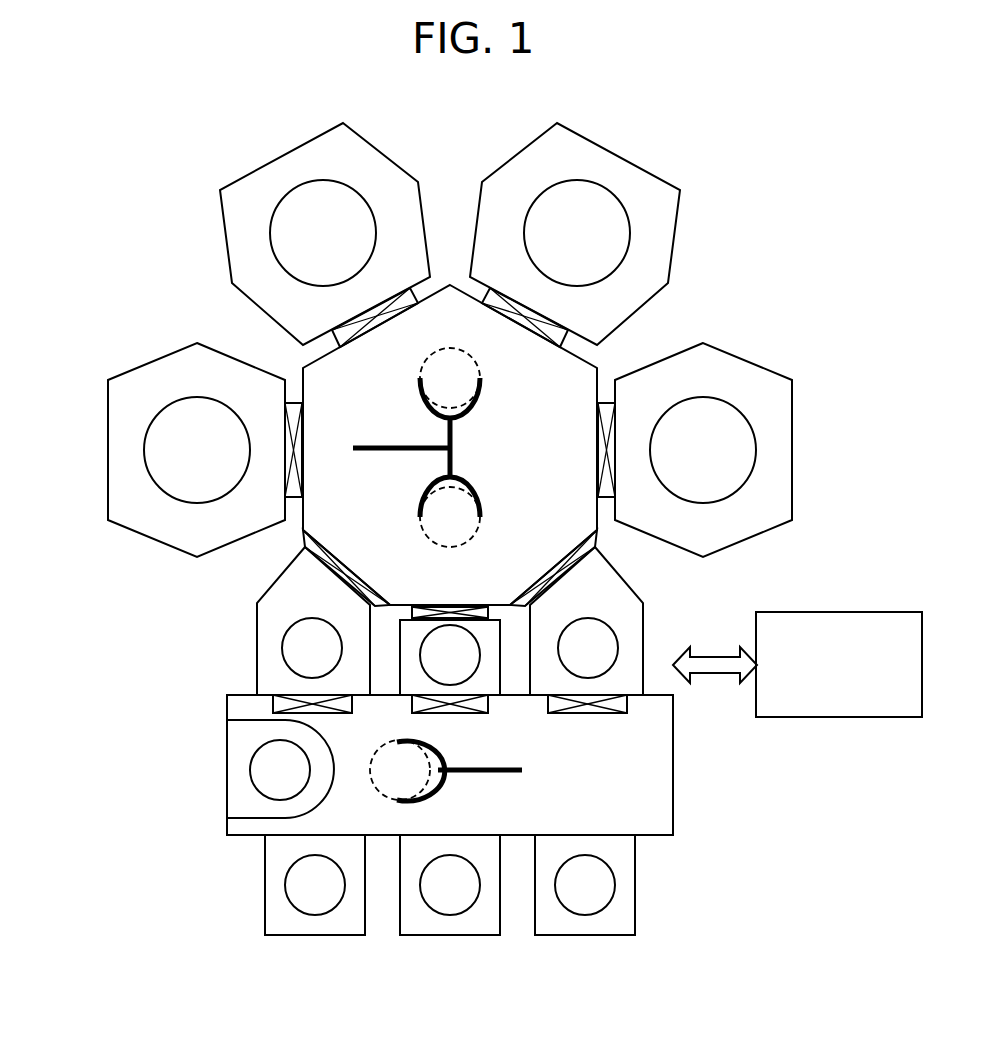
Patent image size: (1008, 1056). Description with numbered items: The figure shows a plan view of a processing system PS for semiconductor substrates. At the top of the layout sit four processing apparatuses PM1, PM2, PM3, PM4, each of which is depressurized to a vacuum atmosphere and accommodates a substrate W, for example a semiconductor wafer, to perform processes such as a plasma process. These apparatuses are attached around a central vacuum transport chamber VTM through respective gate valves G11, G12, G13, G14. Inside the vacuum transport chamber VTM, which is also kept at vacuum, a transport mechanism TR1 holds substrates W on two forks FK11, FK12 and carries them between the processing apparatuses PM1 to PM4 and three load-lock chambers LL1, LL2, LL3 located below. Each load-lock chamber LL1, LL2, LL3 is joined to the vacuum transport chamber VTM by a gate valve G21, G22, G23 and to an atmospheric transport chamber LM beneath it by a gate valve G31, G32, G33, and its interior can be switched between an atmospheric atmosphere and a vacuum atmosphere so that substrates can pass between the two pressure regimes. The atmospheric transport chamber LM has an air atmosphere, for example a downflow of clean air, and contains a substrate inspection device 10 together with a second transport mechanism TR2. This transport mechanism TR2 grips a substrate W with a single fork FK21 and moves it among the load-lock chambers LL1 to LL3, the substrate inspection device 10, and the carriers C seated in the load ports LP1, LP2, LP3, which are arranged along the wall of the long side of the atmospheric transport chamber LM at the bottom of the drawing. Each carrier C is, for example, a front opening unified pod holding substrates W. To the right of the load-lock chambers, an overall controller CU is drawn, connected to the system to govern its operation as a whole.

The processing system PS is at (134, 100).
The processing apparatus PM1 is at (285, 154).
The processing apparatus PM2 is at (615, 154).
The processing apparatus PM3 is at (745, 360).
The processing apparatus PM4 is at (155, 360).
The vacuum transport chamber VTM is at (448, 284).
The substrate W is at (194, 758).
The gate valve G11 is at (335, 345).
The gate valve G12 is at (565, 345).
The gate valve G13 is at (607, 403).
The gate valve G14 is at (293, 403).
The gate valve G21 is at (303, 540).
The gate valve G22 is at (410, 612).
The gate valve G23 is at (597, 540).
The gate valve G31 is at (273, 703).
The gate valve G32 is at (450, 714).
The gate valve G33 is at (605, 723).
The transport mechanism TR1 is at (450, 447).
The fork FK11 is at (423, 405).
The fork FK12 is at (462, 485).
The load-lock chamber LL1 is at (257, 647).
The load-lock chamber LL2 is at (400, 677).
The load-lock chamber LL3 is at (645, 615).
The atmospheric transport chamber LM is at (441, 788).
The substrate inspection device 10 is at (250, 820).
The transport mechanism TR2 is at (441, 782).
The fork FK21 is at (437, 793).
The load port LP1 is at (345, 835).
The load port LP2 is at (487, 835).
The load port LP3 is at (587, 833).
The carrier C is at (317, 935).
The overall controller CU is at (840, 612).